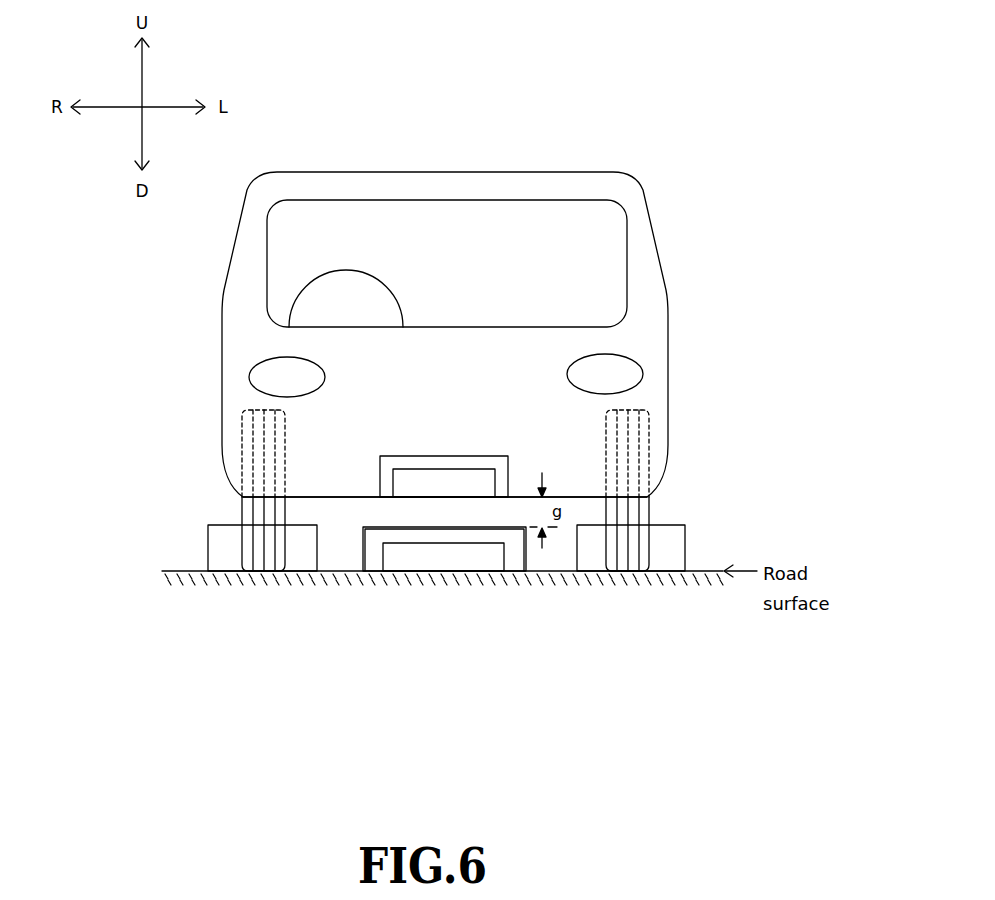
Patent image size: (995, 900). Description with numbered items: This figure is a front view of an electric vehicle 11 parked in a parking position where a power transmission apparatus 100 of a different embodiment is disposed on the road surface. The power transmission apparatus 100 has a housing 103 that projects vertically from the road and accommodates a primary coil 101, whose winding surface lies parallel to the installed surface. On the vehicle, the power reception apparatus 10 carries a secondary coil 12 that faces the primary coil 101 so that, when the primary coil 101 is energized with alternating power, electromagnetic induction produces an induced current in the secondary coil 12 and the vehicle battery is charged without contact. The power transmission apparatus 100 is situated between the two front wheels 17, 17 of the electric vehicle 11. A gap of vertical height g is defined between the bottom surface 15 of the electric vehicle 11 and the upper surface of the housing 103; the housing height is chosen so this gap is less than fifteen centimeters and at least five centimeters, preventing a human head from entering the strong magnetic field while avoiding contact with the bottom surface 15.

The power reception apparatus 10 is at (457, 447).
The electric vehicle 11 is at (494, 172).
The secondary coil 12 is at (403, 469).
The bottom surface 15 is at (333, 500).
The front wheels 17 is at (243, 511).
The power transmission apparatus 100 is at (430, 532).
The primary coil 101 is at (504, 556).
The housing 103 is at (362, 552).